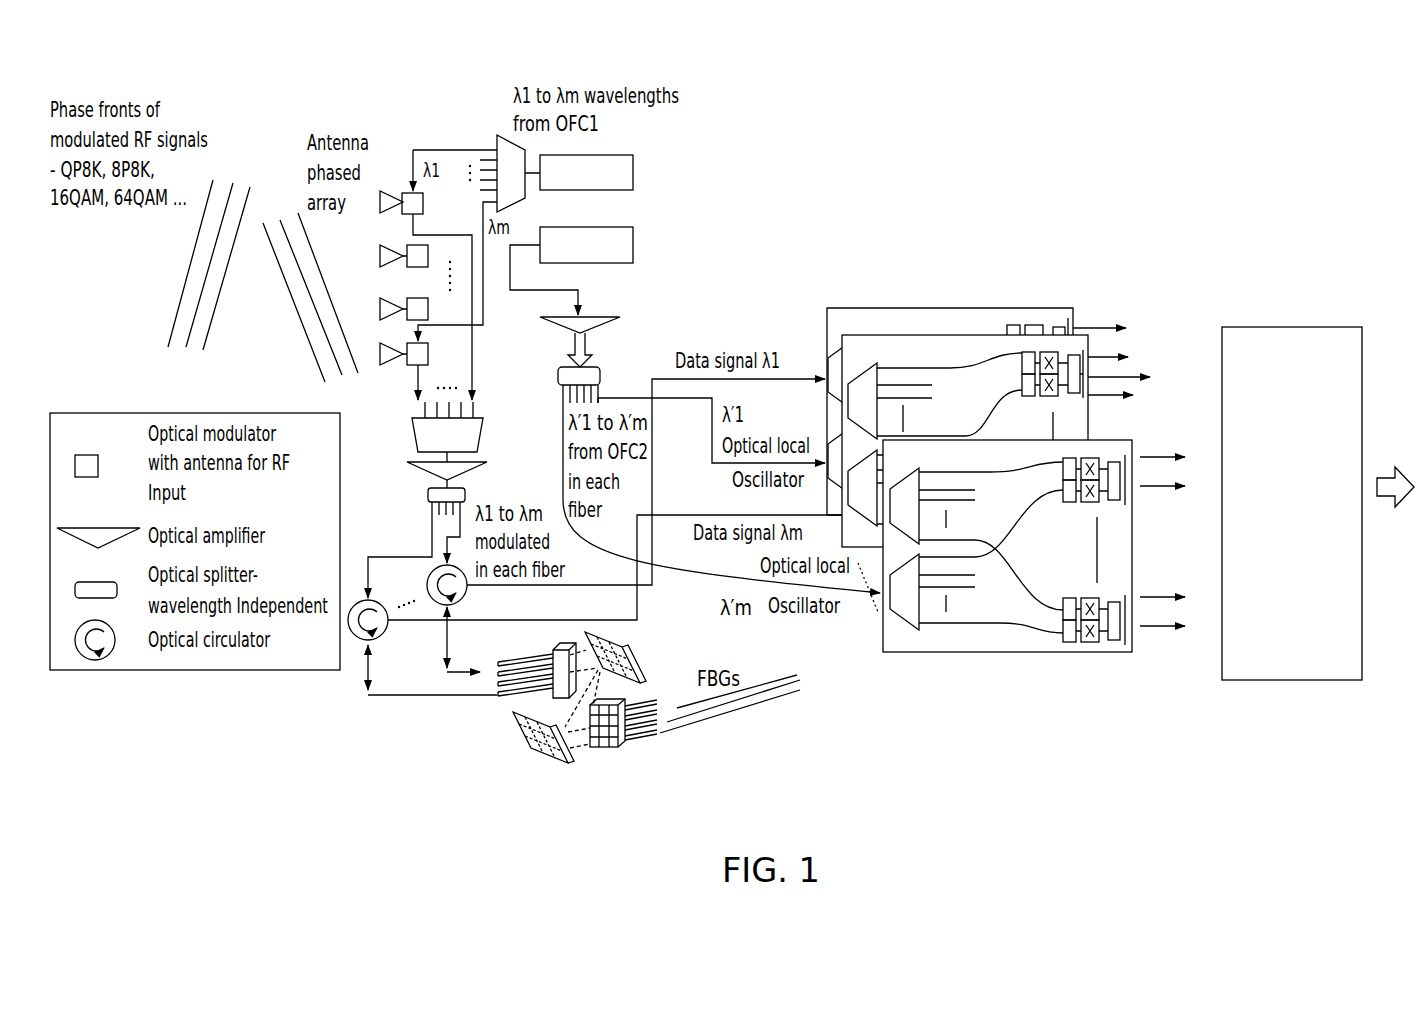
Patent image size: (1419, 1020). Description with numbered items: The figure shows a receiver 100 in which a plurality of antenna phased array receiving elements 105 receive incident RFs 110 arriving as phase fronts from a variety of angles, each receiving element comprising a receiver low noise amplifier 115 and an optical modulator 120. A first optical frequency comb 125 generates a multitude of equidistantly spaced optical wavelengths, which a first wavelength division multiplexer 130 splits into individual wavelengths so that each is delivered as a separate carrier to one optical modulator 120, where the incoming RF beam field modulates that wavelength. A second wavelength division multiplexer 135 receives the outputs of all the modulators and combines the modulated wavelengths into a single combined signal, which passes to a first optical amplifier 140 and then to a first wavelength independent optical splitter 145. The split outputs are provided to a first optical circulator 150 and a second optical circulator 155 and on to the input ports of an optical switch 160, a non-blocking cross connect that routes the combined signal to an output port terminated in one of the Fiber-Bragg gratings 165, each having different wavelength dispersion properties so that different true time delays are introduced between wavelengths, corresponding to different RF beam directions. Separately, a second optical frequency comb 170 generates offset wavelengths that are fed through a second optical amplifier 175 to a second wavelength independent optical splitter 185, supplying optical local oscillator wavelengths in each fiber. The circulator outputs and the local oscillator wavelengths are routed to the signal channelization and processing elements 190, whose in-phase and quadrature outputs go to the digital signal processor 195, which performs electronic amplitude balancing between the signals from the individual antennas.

The receiver 100 is at (1294, 139).
The antenna phased array receiving elements 105 is at (380, 310).
The incident RFs 110 is at (187, 282).
The receiver Low Noise Amplifier 115 is at (393, 367).
The optical modulator 120 is at (423, 202).
The first optical frequency comb 125 is at (597, 155).
The first wavelength division multiplexer 130 is at (496, 141).
The second wavelength division multiplexer 135 is at (412, 440).
The first optical amplifier 140 is at (485, 466).
The first wavelength independent optical splitter 145 is at (465, 494).
The first optical circulator 150 is at (388, 633).
The second optical circulator 155 is at (466, 592).
The optical switch 160 is at (570, 763).
The Fiber-Bragg gratings 165 is at (766, 683).
The second optical frequency comb 170 is at (598, 227).
The second optical amplifier 175 is at (603, 318).
The second wavelength independent optical splitter 185 is at (600, 378).
The signal channelization and processing elements 190 is at (1077, 320).
The digital signal processor 195 is at (1290, 326).